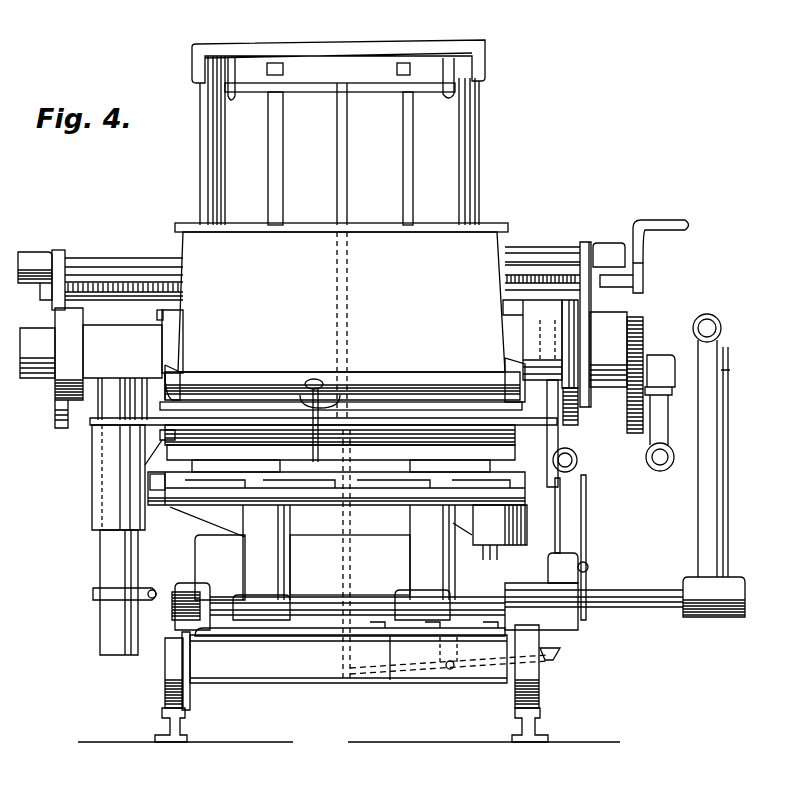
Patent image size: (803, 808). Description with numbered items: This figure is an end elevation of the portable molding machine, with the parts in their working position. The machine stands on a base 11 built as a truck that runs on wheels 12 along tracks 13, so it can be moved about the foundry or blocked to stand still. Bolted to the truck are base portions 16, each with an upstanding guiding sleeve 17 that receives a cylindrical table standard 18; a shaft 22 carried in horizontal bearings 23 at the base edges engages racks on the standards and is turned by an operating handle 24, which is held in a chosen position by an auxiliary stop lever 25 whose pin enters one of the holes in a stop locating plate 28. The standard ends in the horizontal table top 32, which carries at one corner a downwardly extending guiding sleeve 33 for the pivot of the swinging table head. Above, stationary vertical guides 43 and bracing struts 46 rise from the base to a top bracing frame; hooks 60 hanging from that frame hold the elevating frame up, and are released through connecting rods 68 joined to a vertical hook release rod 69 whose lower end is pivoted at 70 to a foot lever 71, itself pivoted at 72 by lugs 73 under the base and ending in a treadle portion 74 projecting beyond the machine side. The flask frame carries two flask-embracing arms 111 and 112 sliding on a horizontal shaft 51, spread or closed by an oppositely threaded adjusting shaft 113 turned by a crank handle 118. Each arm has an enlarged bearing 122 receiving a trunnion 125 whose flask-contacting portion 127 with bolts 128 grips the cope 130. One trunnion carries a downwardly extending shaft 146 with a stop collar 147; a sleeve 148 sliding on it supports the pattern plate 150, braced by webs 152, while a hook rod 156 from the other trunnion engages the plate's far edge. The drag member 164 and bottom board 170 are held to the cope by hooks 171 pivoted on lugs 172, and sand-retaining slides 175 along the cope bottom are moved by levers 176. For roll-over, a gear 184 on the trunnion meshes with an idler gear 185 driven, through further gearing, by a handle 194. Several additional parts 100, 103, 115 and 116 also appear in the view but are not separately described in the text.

The base 11 is at (263, 670).
The wheels 12 is at (165, 681).
The tracks 13 is at (548, 718).
The base portions 16 is at (208, 636).
The guiding sleeve 17 is at (405, 595).
The table standard 18 is at (255, 556).
The shaft 22 is at (303, 595).
The bearings 23 is at (188, 585).
The operating handle 24 is at (562, 521).
The auxiliary stop lever 25 is at (587, 536).
The stop locating plate 28 is at (565, 632).
The table top 32 is at (185, 512).
The guiding sleeve 33 is at (510, 515).
The guides 43 is at (480, 165).
The bracing struts 46 is at (278, 198).
The horizontal shaft 51 is at (97, 260).
The hooks 60 is at (232, 104).
The connecting rods 68 is at (322, 85).
The hook release rod 69 is at (347, 172).
The pivot 70 is at (349, 672).
The foot lever 71 is at (431, 672).
The pivot 72 is at (458, 672).
The lugs 73 is at (442, 647).
The treadle portion 74 is at (558, 656).
The shaft 100 is at (650, 590).
The tube 103 is at (708, 516).
The flask-embracing arm 111 is at (52, 306).
The flask-embracing arm 112 is at (586, 242).
The adjusting shaft 113 is at (515, 256).
The top frame 115 is at (200, 52).
The link 116 is at (392, 680).
The crank handle 118 is at (668, 222).
The bearing 122 is at (48, 380).
The trunnion 125 is at (122, 372).
The flask-contacting portion 127 is at (175, 332).
The bolts 128 is at (157, 313).
The cope 130 is at (183, 228).
The shaft 146 is at (108, 563).
The stop collar 147 is at (92, 598).
The sleeve 148 is at (92, 478).
The pattern plate 150 is at (92, 418).
The webs 152 is at (150, 436).
The hook rod 156 is at (560, 452).
The drag member 164 is at (380, 430).
The bottom board 170 is at (430, 448).
The hooks 171 is at (340, 400).
The lugs 172 is at (309, 380).
The sand-retaining slides 175 is at (212, 415).
The levers 176 is at (190, 352).
The gear 184 is at (645, 335).
The idler gear 185 is at (636, 432).
The handle 194 is at (650, 460).